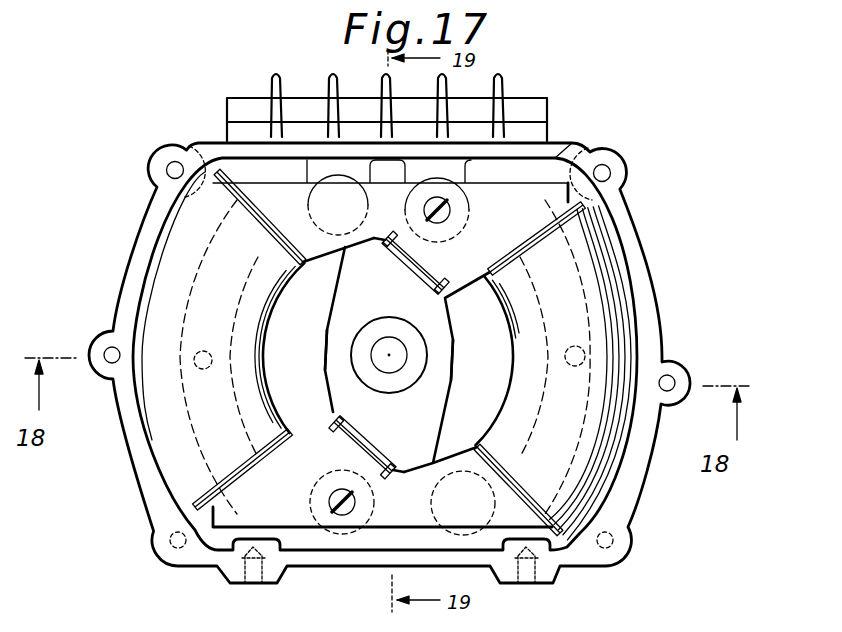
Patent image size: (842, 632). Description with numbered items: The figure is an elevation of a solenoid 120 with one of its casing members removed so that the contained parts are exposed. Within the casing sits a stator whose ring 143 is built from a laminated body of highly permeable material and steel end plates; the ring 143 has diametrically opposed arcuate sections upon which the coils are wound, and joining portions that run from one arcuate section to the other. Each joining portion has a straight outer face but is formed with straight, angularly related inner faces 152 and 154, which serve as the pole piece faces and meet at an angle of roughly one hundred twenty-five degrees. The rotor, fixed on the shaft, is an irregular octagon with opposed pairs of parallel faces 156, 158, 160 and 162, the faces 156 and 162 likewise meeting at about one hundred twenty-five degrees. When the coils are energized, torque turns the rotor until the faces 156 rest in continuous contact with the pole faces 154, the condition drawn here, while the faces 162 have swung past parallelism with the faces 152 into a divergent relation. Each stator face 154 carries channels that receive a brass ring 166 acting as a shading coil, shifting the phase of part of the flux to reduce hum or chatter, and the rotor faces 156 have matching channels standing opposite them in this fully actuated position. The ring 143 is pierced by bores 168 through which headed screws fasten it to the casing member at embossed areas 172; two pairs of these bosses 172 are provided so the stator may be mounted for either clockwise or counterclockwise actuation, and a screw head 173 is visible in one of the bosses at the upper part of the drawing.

The solenoid 120 is at (133, 500).
The ring 143 is at (570, 203).
The inner face 152 is at (318, 263).
The inner face 154 is at (400, 263).
The rotor face 156 is at (502, 262).
The rotor face 158 is at (330, 380).
The rotor face 160 is at (325, 350).
The rotor face 162 is at (384, 239).
The brass ring 166 is at (412, 251).
The bore 168 is at (199, 372).
The embossed area 172 is at (306, 206).
The boss screw 173 is at (453, 212).